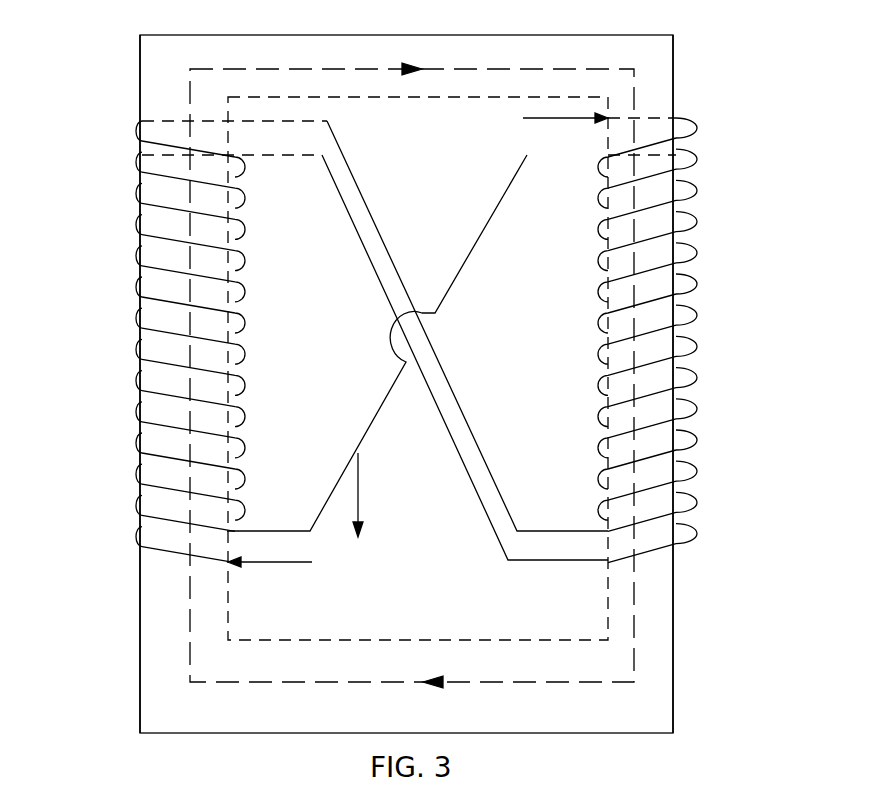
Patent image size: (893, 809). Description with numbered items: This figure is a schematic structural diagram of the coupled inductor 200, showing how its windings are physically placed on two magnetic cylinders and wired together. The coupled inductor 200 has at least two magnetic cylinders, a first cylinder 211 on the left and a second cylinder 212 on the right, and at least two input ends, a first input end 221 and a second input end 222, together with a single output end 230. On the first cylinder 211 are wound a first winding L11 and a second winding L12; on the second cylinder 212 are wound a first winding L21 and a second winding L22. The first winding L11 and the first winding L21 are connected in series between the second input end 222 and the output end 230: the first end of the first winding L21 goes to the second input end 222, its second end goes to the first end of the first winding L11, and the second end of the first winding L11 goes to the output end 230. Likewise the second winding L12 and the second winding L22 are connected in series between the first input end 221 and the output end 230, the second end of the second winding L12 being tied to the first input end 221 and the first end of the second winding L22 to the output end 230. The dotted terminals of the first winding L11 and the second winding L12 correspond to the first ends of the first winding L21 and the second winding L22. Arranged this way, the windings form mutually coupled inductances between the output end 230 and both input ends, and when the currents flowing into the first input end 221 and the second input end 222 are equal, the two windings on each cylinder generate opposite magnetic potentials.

The coupled inductor 200 is at (750, 59).
The first cylinder 211 is at (140, 608).
The second cylinder 212 is at (673, 608).
The first input end 221 is at (270, 576).
The second input end 222 is at (544, 126).
The output end 230 is at (381, 495).
The first winding on the first cylinder L11 is at (231, 310).
The second winding on the first cylinder L12 is at (229, 343).
The first winding on the second cylinder L21 is at (647, 309).
The second winding on the second cylinder L22 is at (647, 343).